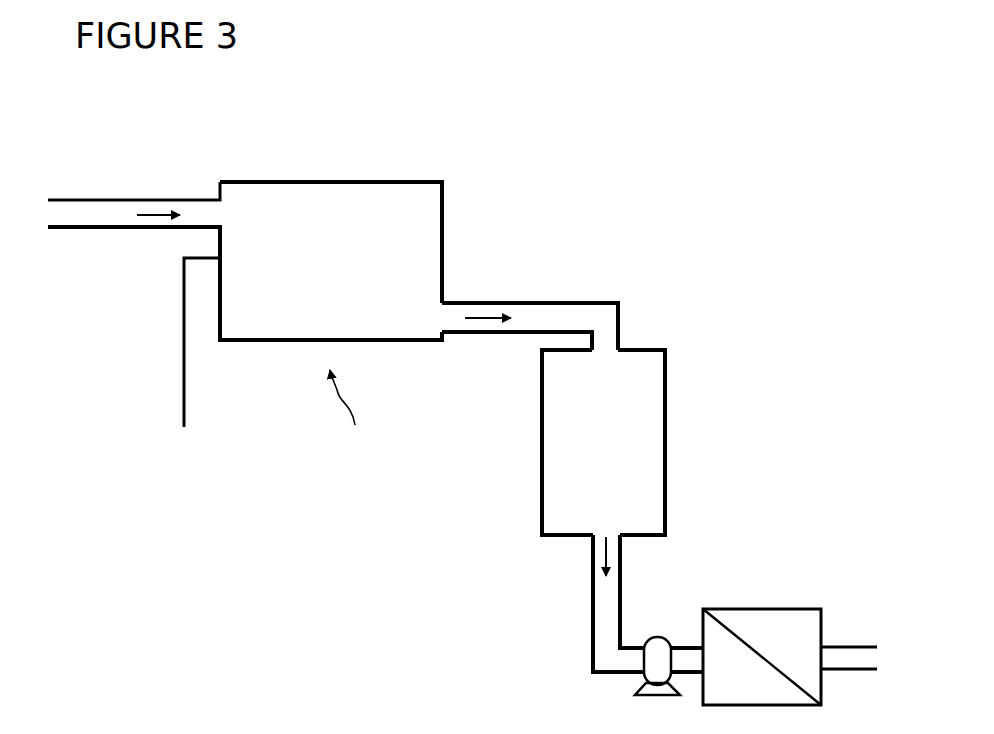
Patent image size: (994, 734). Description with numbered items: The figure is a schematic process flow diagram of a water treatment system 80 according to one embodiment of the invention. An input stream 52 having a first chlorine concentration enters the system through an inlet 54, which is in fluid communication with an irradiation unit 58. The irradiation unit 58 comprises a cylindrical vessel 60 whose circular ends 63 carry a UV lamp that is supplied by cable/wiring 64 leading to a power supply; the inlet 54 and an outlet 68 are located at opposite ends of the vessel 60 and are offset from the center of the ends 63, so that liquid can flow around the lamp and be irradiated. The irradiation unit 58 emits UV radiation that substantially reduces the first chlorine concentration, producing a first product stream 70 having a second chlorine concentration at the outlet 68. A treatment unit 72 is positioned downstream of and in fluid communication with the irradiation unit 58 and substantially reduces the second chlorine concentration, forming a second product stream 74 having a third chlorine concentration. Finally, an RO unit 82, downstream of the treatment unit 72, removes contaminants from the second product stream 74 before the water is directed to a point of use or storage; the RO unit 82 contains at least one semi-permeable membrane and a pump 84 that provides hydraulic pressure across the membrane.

The input stream 52 is at (157, 212).
The inlet 54 is at (220, 185).
The irradiation unit 58 is at (352, 414).
The cylindrical vessel 60 is at (362, 180).
The circular ends 63 is at (445, 212).
The cable/wiring 64 is at (183, 331).
The outlet 68 is at (444, 303).
The first product stream 70 is at (488, 317).
The treatment unit 72 is at (667, 378).
The second product stream 74 is at (608, 543).
The water treatment system 80 is at (506, 219).
The RO unit 82 is at (764, 613).
The pump 84 is at (658, 636).